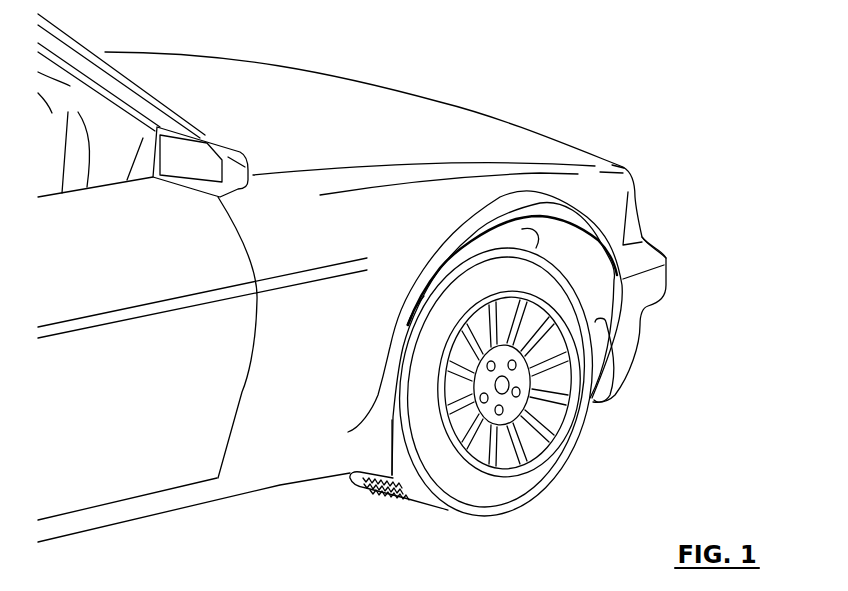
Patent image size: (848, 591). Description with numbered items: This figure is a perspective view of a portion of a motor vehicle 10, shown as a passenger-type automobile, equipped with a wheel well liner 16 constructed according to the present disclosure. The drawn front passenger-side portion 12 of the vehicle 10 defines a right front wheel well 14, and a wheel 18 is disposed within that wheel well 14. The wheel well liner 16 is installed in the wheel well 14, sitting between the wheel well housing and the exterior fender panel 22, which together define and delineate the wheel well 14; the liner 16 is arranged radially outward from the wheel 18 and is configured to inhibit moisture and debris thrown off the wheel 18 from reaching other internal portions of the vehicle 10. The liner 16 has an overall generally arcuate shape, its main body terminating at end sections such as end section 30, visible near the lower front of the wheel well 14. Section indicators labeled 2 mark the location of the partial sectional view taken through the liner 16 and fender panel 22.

The motor vehicle 10 is at (592, 94).
The front passenger-side portion 12 is at (600, 417).
The right front wheel well 14 is at (537, 245).
The wheel well liner 16 is at (596, 290).
The wheel 18 is at (477, 493).
The exterior fender panel 22 is at (580, 173).
The end section 30 is at (603, 327).
The section line 2 is at (542, 143).